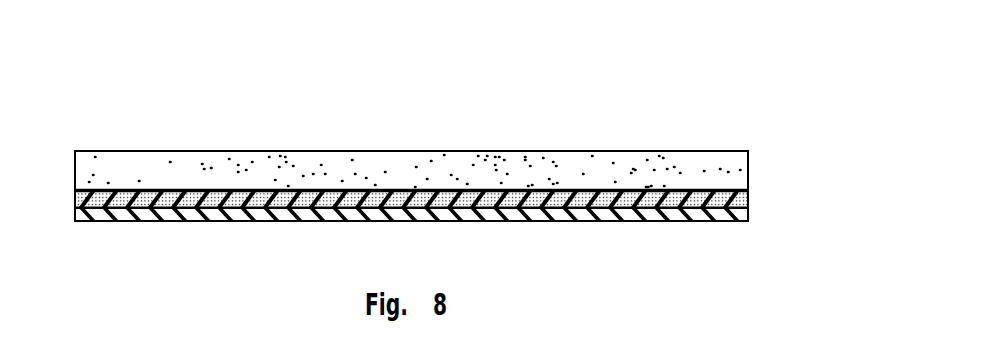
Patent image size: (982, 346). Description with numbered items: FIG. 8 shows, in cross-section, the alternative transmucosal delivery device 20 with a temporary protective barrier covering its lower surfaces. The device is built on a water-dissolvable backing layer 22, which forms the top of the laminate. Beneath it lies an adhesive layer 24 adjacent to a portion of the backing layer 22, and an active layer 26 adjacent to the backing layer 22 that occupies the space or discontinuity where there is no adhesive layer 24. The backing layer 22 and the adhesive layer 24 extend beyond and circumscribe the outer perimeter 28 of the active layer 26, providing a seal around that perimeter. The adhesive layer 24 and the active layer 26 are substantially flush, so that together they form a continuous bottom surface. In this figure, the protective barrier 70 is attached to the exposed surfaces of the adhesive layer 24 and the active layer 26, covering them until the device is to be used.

The transmucosal delivery device 20 is at (542, 122).
The backing layer 22 is at (735, 160).
The adhesive layer 24 is at (693, 205).
The active layer 26 is at (495, 202).
The outer perimeter 28 is at (300, 197).
The protective barrier 70 is at (132, 221).